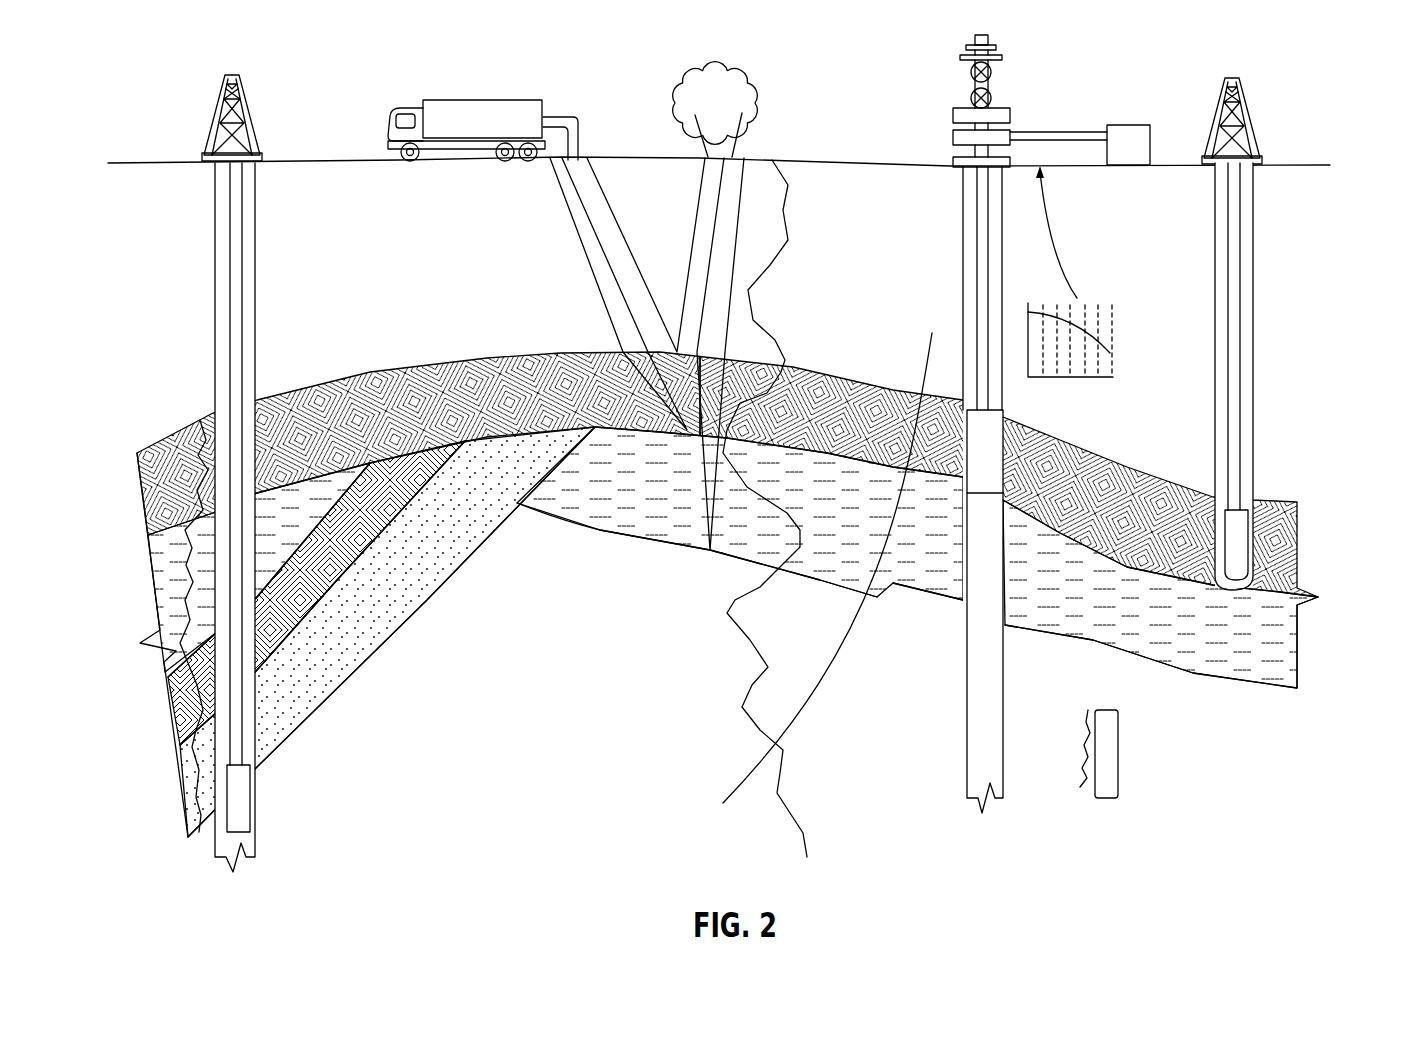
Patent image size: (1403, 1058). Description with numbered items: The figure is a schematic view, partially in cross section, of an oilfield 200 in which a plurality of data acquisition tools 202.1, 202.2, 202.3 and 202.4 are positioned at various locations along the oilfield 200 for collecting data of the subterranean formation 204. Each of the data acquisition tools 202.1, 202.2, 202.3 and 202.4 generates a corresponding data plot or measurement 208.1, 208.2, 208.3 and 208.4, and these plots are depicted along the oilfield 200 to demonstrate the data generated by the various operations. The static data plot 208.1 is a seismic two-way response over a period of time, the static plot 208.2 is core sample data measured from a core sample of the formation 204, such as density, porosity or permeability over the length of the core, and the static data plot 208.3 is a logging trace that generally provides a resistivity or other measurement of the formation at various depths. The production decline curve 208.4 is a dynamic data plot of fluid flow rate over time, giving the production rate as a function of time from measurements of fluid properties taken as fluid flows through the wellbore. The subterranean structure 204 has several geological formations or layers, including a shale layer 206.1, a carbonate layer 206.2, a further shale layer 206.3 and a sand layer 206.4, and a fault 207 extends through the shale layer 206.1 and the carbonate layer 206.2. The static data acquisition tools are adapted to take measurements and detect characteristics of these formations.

The oilfield 200 is at (1247, 46).
The data acquisition tool 202.1 is at (482, 98).
The data acquisition tool 202.2 is at (1297, 512).
The data acquisition tool 202.3 is at (250, 800).
The data acquisition tool 202.4 is at (1005, 453).
The subterranean formation 204 is at (614, 634).
The shale layer 206.1 is at (348, 440).
The carbonate layer 206.2 is at (334, 519).
The shale layer 206.3 is at (313, 590).
The sand layer 206.4 is at (444, 573).
The fault 207 is at (923, 363).
The static data plot 208.1 is at (752, 685).
The static plot 208.2 is at (1085, 733).
The static data plot 208.3 is at (177, 573).
The production decline curve 208.4 is at (1077, 377).